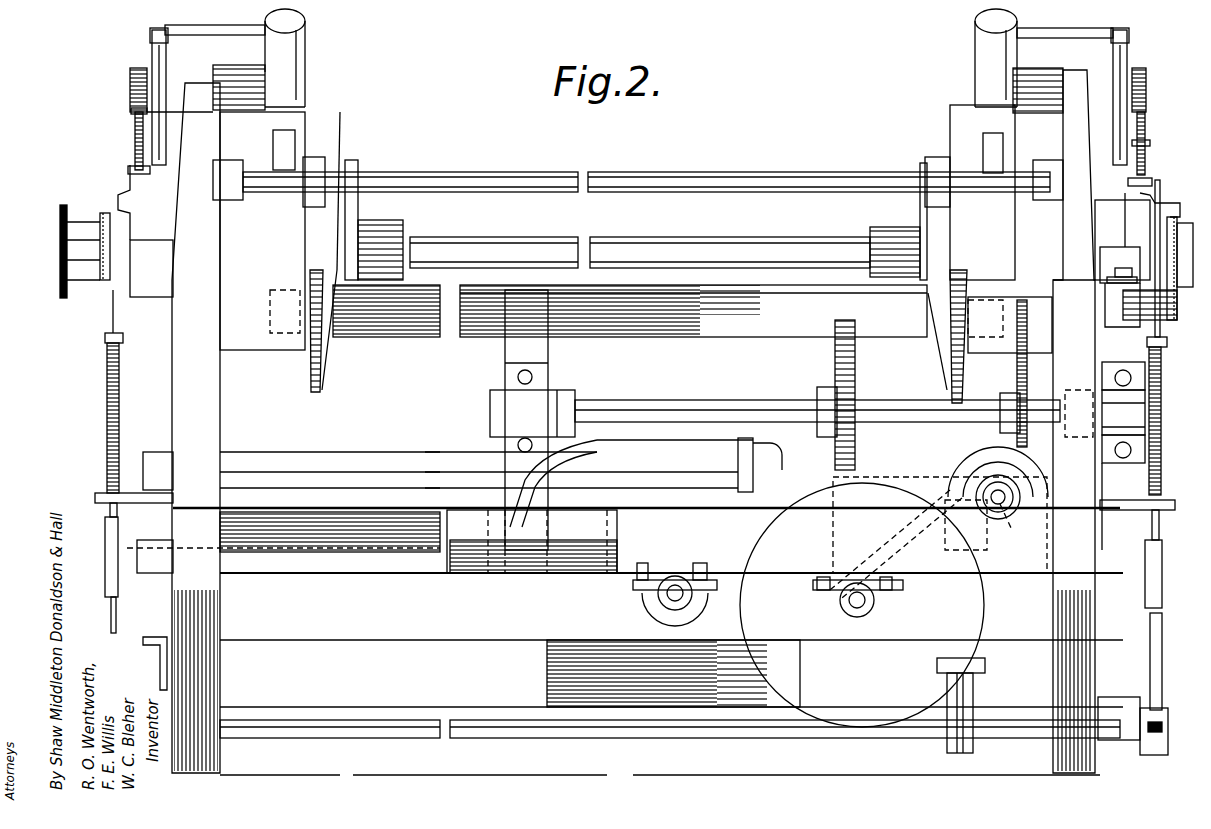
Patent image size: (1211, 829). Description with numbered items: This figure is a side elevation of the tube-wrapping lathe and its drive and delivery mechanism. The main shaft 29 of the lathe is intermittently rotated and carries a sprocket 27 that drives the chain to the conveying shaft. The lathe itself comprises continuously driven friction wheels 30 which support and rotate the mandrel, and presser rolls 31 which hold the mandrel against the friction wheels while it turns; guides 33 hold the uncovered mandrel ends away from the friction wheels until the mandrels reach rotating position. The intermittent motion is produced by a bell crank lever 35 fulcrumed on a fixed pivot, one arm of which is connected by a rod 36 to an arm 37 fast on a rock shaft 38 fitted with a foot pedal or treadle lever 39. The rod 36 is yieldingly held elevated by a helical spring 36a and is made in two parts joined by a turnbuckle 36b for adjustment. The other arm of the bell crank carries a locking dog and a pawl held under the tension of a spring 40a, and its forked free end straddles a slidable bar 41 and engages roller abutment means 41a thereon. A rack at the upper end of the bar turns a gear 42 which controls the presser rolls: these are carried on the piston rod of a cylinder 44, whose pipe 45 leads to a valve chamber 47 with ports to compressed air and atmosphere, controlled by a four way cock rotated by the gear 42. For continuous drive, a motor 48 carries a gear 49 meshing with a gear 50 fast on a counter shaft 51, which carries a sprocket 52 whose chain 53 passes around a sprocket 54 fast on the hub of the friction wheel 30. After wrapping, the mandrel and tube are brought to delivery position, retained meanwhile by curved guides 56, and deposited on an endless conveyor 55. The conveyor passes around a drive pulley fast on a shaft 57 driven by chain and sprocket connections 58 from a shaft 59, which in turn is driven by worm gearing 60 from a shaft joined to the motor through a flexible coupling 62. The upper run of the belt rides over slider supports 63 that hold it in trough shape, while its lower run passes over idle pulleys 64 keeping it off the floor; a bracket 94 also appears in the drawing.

The sprocket 27 is at (60, 284).
The main shaft 29 is at (640, 240).
The friction wheels 30 is at (681, 227).
The presser rolls 31 is at (285, 146).
The guide 33 is at (352, 208).
The bell crank lever 35 is at (118, 208).
The rod 36 is at (118, 330).
The helical spring 36a is at (120, 386).
The turnbuckle 36b is at (112, 538).
The arm 37 is at (1160, 712).
The rock shaft 38 is at (1026, 732).
The treadle lever 39 is at (966, 686).
The spring 40a is at (100, 238).
The slidable rod or bar 41 is at (133, 116).
The roller abutment means 41a is at (130, 169).
The gear 42 is at (137, 129).
The cylinder 44 is at (288, 52).
The pipe 45 is at (155, 84).
The valve chamber 47 is at (145, 146).
The motor 48 is at (626, 445).
The gear 49 is at (836, 534).
The gear 50 is at (856, 449).
The counter shaft 51 is at (702, 402).
The sprocket 52 is at (995, 472).
The chain 53 is at (1017, 372).
The sprocket 54 is at (1029, 285).
The endless conveyor 55 is at (266, 458).
The curved guides 56 is at (306, 358).
The shaft 57 is at (856, 605).
The chain and sprocket connections 58 is at (952, 490).
The shaft 59 is at (1000, 520).
The worm gearing 60 is at (978, 458).
The flexible coupling 62 is at (880, 515).
The slider supports 63 is at (700, 497).
The idle pulleys 64 is at (676, 618).
The bracket 94 is at (1123, 436).